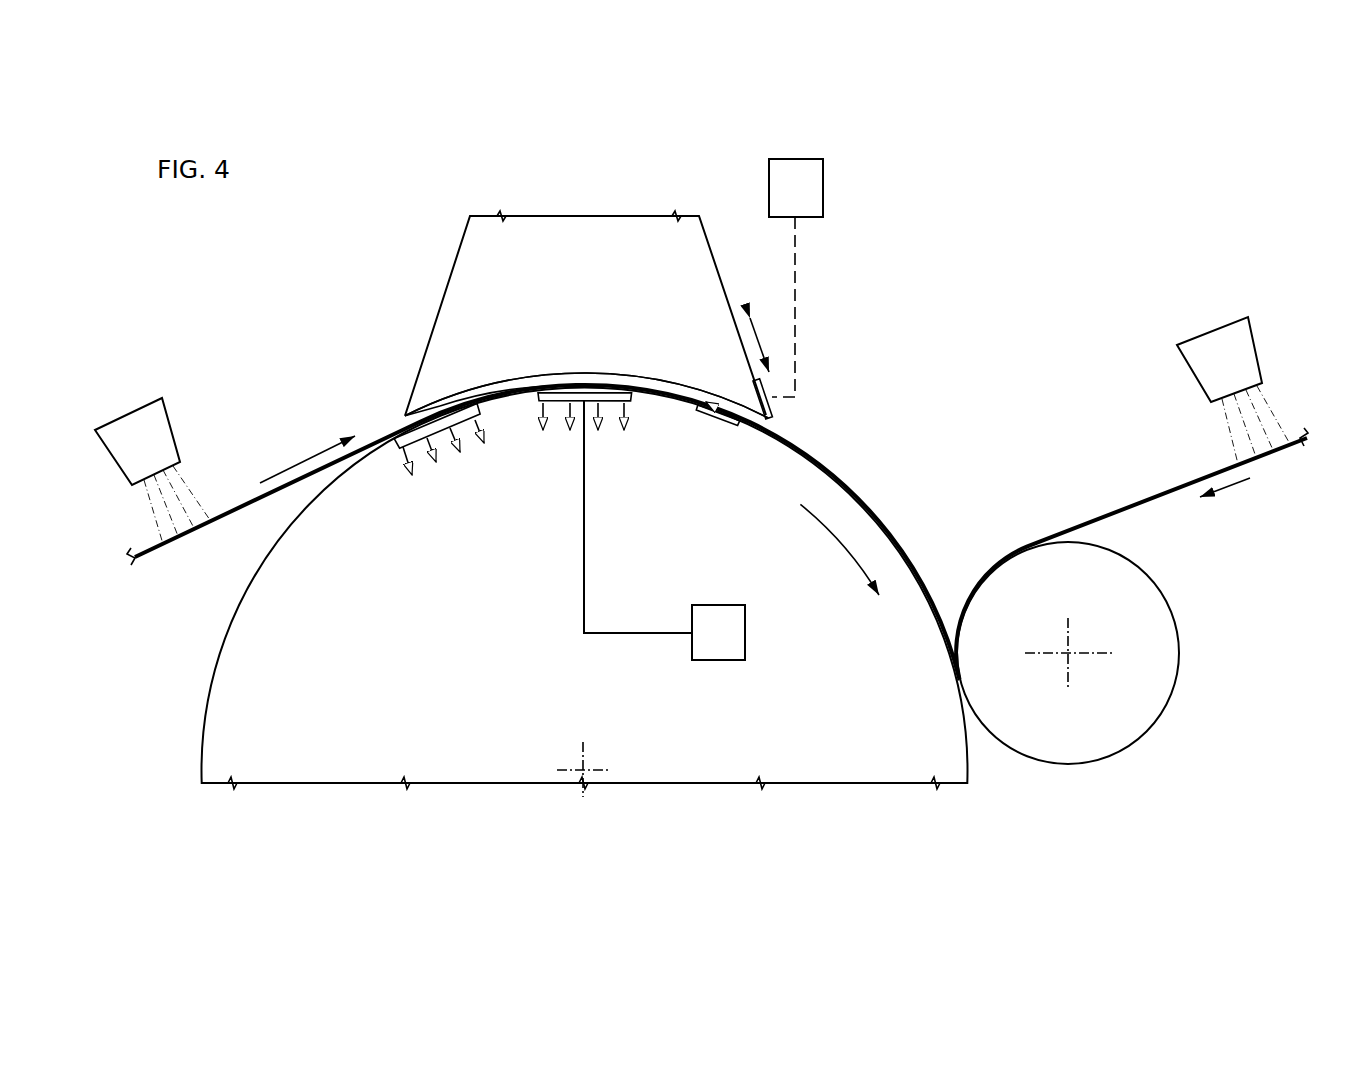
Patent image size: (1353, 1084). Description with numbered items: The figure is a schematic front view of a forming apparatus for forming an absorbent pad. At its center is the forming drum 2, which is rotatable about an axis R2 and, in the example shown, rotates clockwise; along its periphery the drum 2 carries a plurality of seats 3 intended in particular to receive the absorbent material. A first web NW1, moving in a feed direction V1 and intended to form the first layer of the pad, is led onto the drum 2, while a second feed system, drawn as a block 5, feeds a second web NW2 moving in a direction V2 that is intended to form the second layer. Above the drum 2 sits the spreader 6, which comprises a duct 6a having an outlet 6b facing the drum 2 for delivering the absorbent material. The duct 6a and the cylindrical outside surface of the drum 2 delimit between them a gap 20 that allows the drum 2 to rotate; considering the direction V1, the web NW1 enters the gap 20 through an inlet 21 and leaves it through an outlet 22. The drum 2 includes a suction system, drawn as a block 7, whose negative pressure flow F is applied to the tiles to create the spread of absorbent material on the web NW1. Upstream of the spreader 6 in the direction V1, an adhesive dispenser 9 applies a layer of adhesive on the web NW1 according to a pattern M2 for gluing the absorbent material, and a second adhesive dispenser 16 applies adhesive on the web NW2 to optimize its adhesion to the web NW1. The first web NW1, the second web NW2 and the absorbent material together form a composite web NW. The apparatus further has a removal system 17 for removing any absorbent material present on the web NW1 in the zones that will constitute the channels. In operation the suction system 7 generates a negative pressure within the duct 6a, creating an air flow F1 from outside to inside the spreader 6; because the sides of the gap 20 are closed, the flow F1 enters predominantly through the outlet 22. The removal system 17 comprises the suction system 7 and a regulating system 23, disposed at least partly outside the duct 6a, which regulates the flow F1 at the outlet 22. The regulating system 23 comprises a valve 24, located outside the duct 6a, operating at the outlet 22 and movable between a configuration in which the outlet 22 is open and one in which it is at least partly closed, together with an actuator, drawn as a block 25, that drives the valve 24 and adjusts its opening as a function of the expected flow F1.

The drum 2 is at (200, 725).
The seats 3 is at (419, 444).
The second feed system 5 is at (1098, 676).
The spreader 6 is at (591, 307).
The duct 6a is at (631, 236).
The outlet 6b is at (512, 391).
The suction system 7 is at (727, 647).
The adhesive dispenser 9 is at (126, 425).
The second adhesive dispenser 16 is at (1221, 324).
The removal system 17 is at (823, 363).
The gap 20 is at (546, 376).
The inlet 21 is at (399, 421).
The outlet 22 is at (771, 425).
The regulating system 23 is at (837, 198).
The valve 24 is at (776, 408).
The actuator 25 is at (812, 203).
The negative pressure flow F is at (452, 437).
The negative pressure air flow F1 is at (714, 412).
The adhesive pattern M2 is at (248, 497).
The feed direction of first web V1 is at (278, 465).
The feed direction of second web V2 is at (1237, 486).
The composite web NW is at (978, 783).
The first web NW1 is at (152, 561).
The second web NW2 is at (1144, 505).
The axis of rotation R2 is at (583, 770).